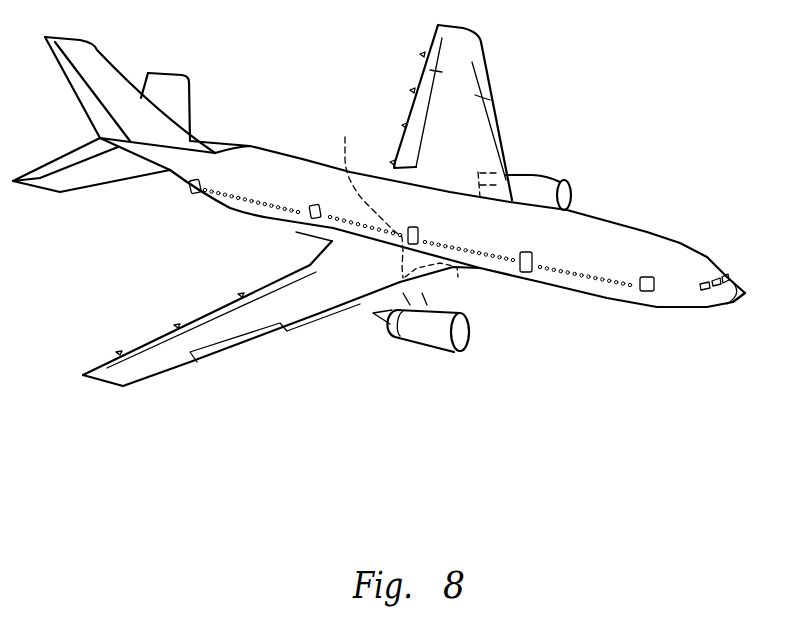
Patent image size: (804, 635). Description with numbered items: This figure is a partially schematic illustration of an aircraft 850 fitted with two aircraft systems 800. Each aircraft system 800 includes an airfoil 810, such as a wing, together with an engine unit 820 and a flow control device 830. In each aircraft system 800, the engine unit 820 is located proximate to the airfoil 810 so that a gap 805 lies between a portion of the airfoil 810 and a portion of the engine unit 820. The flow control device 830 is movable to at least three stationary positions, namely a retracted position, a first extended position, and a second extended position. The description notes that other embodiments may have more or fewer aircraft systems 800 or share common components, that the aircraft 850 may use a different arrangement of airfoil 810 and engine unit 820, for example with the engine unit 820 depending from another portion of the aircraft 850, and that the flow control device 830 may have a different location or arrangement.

The aircraft system 800 is at (668, 54).
The gap 805 is at (527, 192).
The airfoil 810 is at (460, 52).
The engine unit 820 is at (550, 173).
The flow control device 830 is at (510, 172).
The aircraft 850 is at (707, 225).